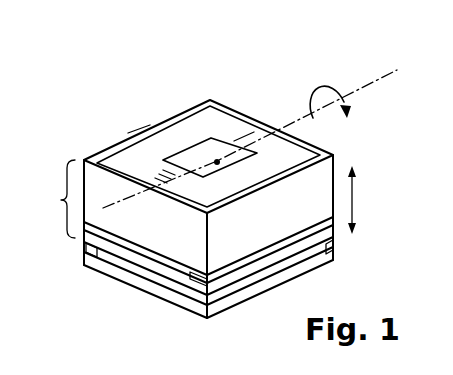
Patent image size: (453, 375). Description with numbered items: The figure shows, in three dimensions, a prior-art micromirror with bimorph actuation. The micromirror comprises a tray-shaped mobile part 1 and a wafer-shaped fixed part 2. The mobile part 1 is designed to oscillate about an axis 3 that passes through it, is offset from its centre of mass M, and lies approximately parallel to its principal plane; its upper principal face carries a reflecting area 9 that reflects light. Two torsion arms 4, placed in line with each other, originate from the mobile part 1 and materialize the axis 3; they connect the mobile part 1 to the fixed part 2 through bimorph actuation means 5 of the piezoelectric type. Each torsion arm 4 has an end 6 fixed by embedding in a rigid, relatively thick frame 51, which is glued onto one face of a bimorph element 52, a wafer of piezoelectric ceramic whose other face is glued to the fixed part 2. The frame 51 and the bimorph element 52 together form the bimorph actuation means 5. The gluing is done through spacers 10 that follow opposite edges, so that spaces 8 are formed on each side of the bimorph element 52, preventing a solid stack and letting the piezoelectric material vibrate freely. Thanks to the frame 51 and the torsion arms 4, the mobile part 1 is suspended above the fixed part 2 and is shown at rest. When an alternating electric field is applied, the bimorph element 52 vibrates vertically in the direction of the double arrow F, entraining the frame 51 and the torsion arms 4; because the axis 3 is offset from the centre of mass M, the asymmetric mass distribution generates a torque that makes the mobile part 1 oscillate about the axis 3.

The mobile part 1 is at (210, 138).
The fixed part 2 is at (161, 290).
The axis 3 is at (382, 76).
The torsion arms 4 is at (217, 162).
The bimorph actuation means 5 is at (58, 199).
The end 6 is at (266, 125).
The spaces 8 is at (139, 253).
The reflecting area 9 is at (223, 142).
The spacers 10 is at (82, 245).
The frame 51 is at (317, 178).
The bimorph element 52 is at (312, 242).
The centre of mass M is at (153, 170).
The double arrow F is at (361, 200).